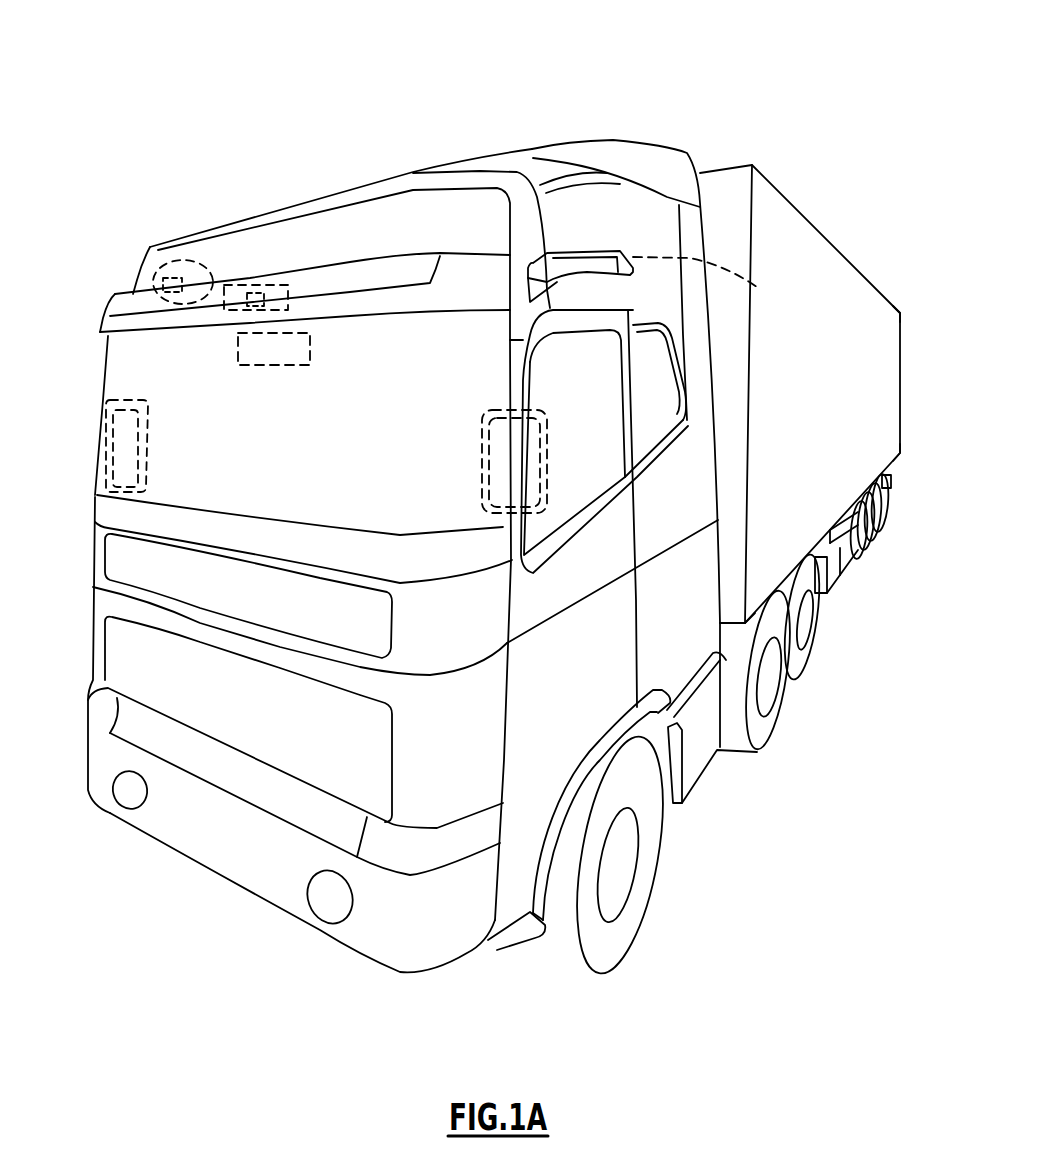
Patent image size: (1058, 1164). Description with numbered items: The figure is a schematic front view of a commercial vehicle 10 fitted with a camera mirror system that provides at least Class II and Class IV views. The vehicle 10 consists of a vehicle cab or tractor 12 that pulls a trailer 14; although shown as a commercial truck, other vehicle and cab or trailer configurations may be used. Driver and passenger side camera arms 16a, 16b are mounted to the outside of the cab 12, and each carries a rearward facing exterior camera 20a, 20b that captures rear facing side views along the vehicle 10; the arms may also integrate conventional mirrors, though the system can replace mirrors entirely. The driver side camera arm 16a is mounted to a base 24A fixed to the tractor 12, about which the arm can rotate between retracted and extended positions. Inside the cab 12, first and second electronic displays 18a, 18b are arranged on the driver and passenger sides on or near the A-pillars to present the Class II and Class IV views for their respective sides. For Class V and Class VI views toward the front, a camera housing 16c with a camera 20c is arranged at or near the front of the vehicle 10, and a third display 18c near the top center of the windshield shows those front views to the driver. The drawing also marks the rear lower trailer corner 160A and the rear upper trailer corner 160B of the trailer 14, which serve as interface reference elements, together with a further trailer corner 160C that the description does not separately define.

The commercial vehicle 10 is at (880, 73).
The tractor 12 is at (87, 558).
The trailer 14 is at (843, 290).
The driver side camera arm 16a is at (577, 265).
The passenger side camera arm 16b is at (167, 262).
The camera housing 16c is at (253, 285).
The first electronic display 18a is at (490, 455).
The second electronic display 18b is at (133, 433).
The third display 18c is at (310, 343).
The exterior camera 20a is at (757, 287).
The exterior camera 20b is at (153, 263).
The camera 20c is at (247, 310).
The base 24A is at (528, 287).
The rear lower trailer corner 160A is at (900, 453).
The rear upper trailer corner 160B is at (900, 313).
The trailer front lower corner 160C is at (748, 607).